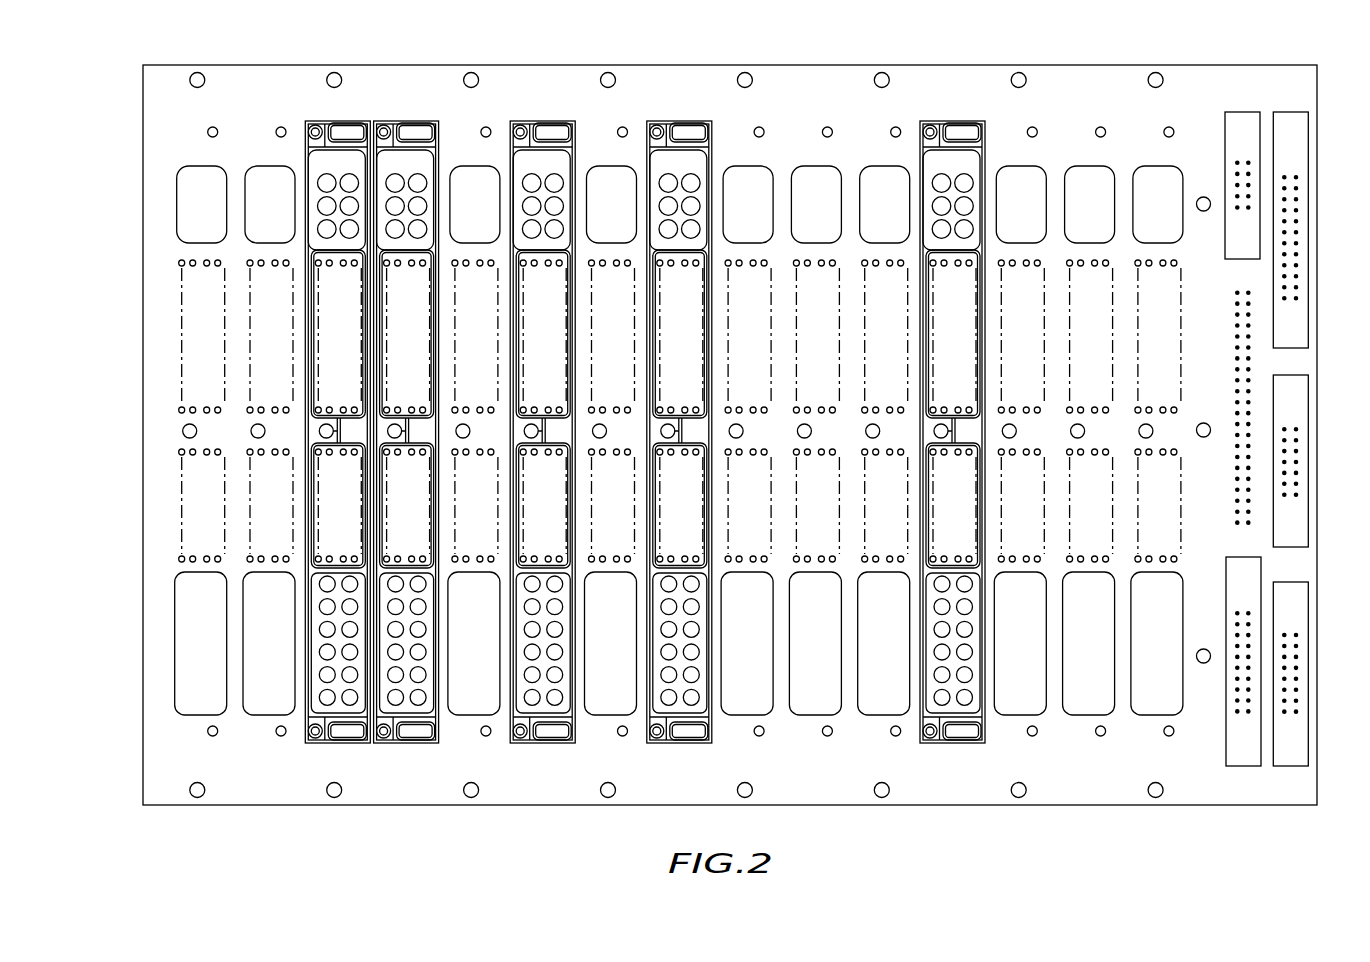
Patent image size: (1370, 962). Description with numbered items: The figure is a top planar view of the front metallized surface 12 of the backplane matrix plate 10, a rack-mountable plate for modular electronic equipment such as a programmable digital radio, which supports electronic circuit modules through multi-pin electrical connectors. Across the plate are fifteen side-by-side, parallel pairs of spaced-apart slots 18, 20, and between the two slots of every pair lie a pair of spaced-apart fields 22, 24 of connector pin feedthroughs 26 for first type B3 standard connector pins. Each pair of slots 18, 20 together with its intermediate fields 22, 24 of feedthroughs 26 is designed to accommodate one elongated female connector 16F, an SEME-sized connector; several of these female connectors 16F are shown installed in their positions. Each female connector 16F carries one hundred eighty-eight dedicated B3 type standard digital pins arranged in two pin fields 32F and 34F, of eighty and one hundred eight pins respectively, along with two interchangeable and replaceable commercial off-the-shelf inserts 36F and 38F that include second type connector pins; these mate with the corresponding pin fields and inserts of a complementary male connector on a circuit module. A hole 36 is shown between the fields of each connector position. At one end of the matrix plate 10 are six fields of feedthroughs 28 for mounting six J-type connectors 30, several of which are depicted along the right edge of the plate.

The backplane matrix plate 10 is at (570, 54).
The front metallized surface 12 is at (817, 70).
The female connector 16F is at (928, 122).
The slot 18 is at (1162, 166).
The slot 20 is at (1157, 714).
The field of connector pin feedthroughs 22 is at (210, 335).
The field of connector pin feedthroughs 24 is at (210, 513).
The connector pin feedthrough 26 is at (193, 267).
The field of feedthroughs 28 is at (1328, 610).
The J-type connector 30 is at (1250, 117).
The pin field 32F is at (412, 508).
The pin field 34F is at (412, 362).
The guide pin hole 36 is at (933, 431).
The insert 36F is at (403, 712).
The insert 38F is at (414, 162).